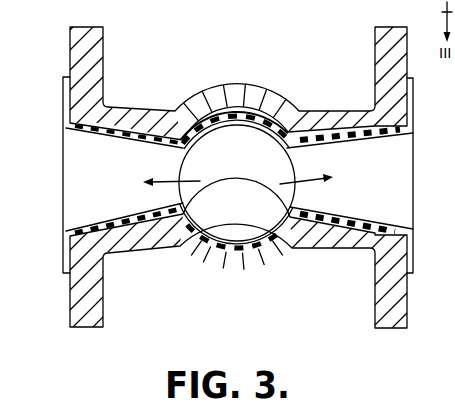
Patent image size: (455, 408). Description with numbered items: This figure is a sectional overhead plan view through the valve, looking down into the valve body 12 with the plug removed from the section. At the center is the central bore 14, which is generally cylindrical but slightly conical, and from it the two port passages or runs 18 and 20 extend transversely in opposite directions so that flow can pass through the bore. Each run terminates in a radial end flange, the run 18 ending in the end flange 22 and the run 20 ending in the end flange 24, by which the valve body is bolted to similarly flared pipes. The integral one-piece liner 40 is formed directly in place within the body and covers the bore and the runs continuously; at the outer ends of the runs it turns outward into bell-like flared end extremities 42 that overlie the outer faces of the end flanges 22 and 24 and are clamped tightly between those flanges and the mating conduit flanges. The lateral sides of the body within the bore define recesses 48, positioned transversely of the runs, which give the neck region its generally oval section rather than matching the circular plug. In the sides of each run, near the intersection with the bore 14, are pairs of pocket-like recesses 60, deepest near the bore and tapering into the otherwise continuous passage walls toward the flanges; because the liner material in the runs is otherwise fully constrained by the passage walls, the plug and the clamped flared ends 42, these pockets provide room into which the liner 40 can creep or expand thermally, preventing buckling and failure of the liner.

The valve body 12 is at (188, 284).
The central bore 14 is at (234, 220).
The port passage or run 18 is at (295, 184).
The port passage or run 20 is at (184, 181).
The radial end flange 22 is at (398, 48).
The radial end flange 24 is at (92, 50).
The liner 40 is at (271, 136).
The flared end extremities 42 is at (65, 250).
The recesses 48 is at (231, 110).
The pocket-like recesses 60 is at (163, 136).